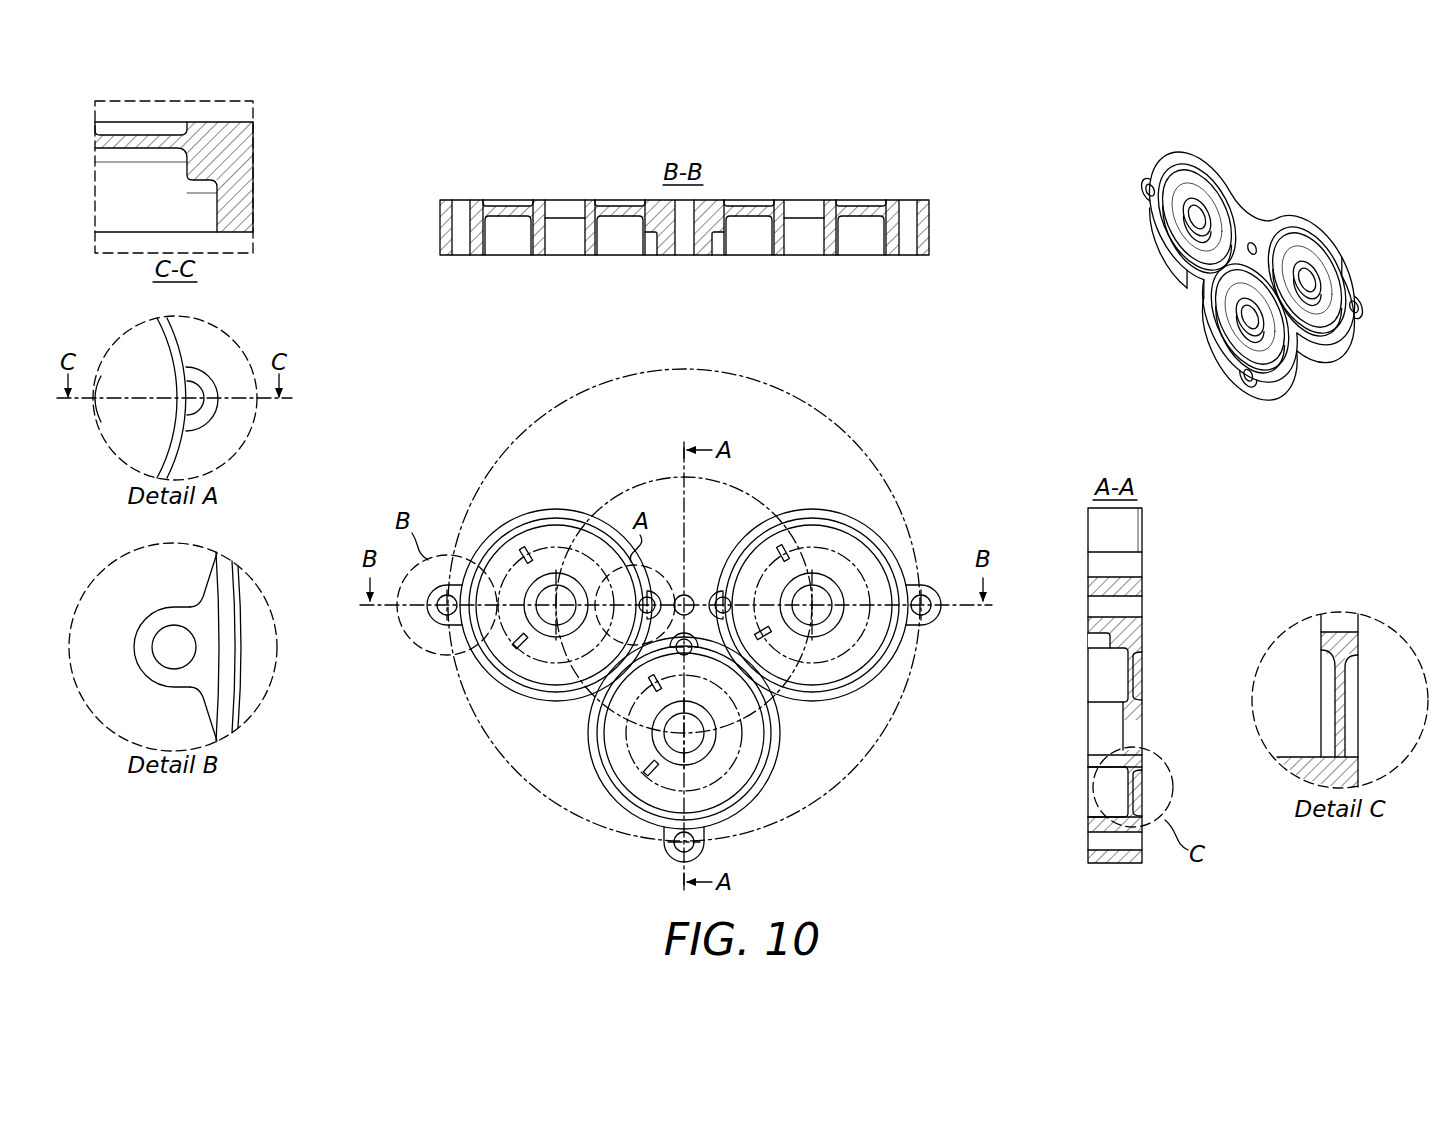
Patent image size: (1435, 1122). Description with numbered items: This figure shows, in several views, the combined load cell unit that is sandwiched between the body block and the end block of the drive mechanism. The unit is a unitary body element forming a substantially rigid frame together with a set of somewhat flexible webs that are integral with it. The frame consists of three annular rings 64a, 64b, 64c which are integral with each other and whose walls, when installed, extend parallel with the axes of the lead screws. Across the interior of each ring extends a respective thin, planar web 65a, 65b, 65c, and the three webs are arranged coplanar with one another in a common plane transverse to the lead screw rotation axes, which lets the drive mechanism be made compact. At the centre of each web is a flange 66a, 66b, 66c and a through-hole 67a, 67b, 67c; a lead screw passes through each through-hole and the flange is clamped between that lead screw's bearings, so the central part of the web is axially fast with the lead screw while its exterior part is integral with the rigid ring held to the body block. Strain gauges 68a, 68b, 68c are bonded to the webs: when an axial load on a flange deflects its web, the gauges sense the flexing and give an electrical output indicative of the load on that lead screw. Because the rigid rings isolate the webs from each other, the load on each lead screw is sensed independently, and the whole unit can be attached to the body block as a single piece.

The annular ring 64a is at (505, 665).
The annular ring 64b is at (769, 757).
The annular ring 64c is at (856, 523).
The web 65a is at (537, 544).
The web 65b is at (660, 805).
The web 65c is at (820, 540).
The flange 66a is at (540, 201).
The flange 66b is at (547, 633).
The flange 66c is at (836, 586).
The through-hole 67a is at (572, 207).
The through-hole 67b is at (551, 590).
The through-hole 67c is at (828, 613).
The strain gauge 68a is at (514, 548).
The strain gauge 68b is at (668, 686).
The strain gauge 68c is at (777, 549).